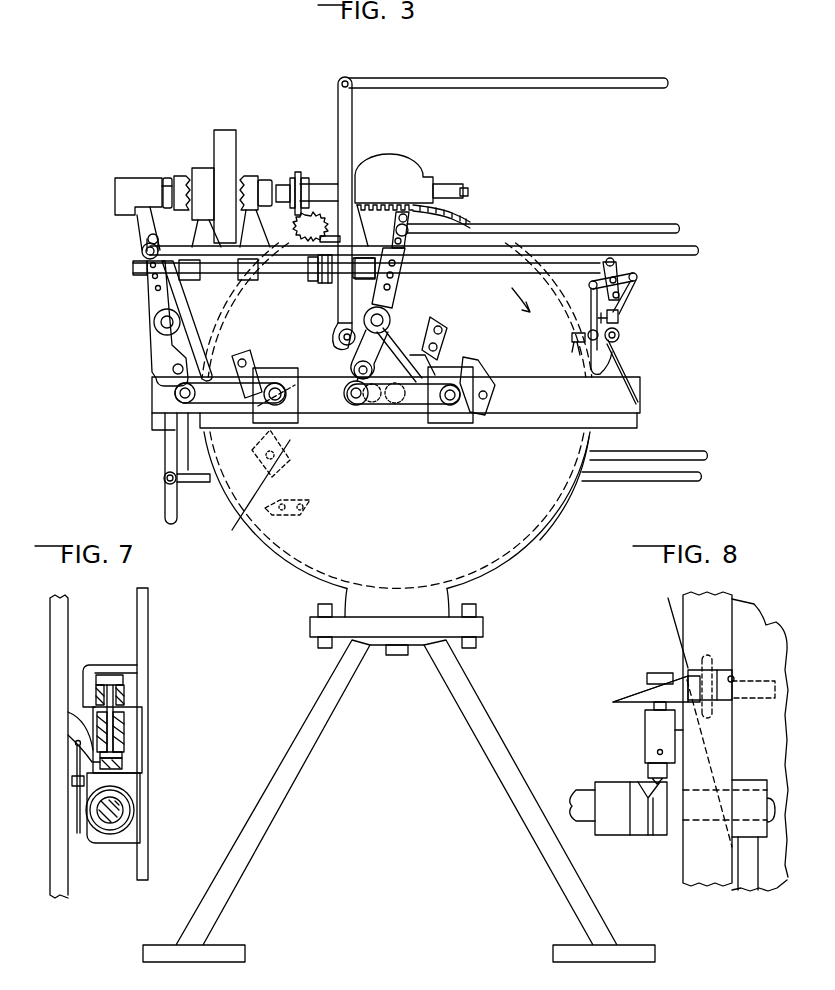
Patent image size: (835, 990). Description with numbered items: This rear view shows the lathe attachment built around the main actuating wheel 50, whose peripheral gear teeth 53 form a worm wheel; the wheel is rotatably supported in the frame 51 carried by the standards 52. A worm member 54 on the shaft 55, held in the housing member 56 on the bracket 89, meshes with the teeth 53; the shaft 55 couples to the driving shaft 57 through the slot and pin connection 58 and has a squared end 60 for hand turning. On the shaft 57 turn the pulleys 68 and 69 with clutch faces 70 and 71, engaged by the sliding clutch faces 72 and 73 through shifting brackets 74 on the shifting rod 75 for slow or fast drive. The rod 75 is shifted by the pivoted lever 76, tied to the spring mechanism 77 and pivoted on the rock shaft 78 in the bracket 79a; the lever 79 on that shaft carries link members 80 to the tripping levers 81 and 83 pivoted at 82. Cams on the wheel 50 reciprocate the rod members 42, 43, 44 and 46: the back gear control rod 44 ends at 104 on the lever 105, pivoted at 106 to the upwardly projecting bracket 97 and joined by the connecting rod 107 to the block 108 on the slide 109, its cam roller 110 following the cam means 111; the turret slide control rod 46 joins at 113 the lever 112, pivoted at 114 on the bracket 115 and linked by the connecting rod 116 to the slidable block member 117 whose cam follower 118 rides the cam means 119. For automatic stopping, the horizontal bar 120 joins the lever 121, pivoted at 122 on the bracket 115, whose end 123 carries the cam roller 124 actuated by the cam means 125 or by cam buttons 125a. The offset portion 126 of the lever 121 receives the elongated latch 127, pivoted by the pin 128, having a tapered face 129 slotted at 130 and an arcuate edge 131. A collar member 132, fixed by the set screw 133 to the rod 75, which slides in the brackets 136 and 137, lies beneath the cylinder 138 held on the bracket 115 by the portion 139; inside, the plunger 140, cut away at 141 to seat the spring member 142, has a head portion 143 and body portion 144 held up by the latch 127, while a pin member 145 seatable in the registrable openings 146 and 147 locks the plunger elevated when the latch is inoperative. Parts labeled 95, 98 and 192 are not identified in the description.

In FIG. 3, the horizontal bar 120 is at (606, 78).
In FIG. 3, the lever 121 is at (338, 106).
In FIG. 7, the lever 121 is at (149, 604).
In FIG. 8, the lever 121 is at (735, 601).
In FIG. 3, the bearing bracket 98 is at (126, 180).
In FIG. 3, the clutch face 73 is at (168, 177).
In FIG. 3, the clutch face 71 is at (182, 175).
In FIG. 3, the pulley 69 is at (200, 167).
In FIG. 3, the pulley 68 is at (226, 129).
In FIG. 3, the clutch face 70 is at (245, 175).
In FIG. 3, the clutch face 72 is at (266, 179).
In FIG. 3, the driving shaft 57 is at (283, 184).
In FIG. 3, the slot and pin connection 58 is at (300, 171).
In FIG. 3, the housing member 56 is at (360, 172).
In FIG. 3, the worm member 54 is at (392, 204).
In FIG. 3, the gear teeth 53 is at (450, 212).
In FIG. 3, the shaft 55 is at (446, 183).
In FIG. 3, the squared end 60 is at (466, 188).
In FIG. 3, the adjustable connection 113 is at (396, 225).
In FIG. 3, the turret slide control rod 46 is at (668, 223).
In FIG. 3, the back gear control rod 44 is at (699, 249).
In FIG. 3, the shifting rod 75 is at (220, 276).
In FIG. 7, the shifting rod 75 is at (120, 820).
In FIG. 8, the shifting rod 75 is at (584, 796).
In FIG. 3, the set screw 133 is at (308, 272).
In FIG. 3, the coupling member 192 is at (326, 284).
In FIG. 3, the tapered face 129 is at (304, 232).
In FIG. 8, the tapered face 129 is at (768, 685).
In FIG. 3, the bracket 136 is at (366, 279).
In FIG. 7, the bracket 136 is at (90, 843).
In FIG. 8, the bracket 136 is at (758, 860).
In FIG. 3, the rod end 104 is at (142, 256).
In FIG. 3, the shifting bracket 74 is at (148, 236).
In FIG. 3, the bracket 137 is at (150, 280).
In FIG. 3, the pivoted lever 105 is at (160, 299).
In FIG. 3, the upwardly projecting bracket 97 is at (160, 350).
In FIG. 3, the pivot 106 is at (155, 327).
In FIG. 3, the slide 109 is at (325, 416).
In FIG. 3, the connecting rod 107 is at (212, 380).
In FIG. 3, the block 108 is at (270, 368).
In FIG. 3, the cam roller 110 is at (284, 384).
In FIG. 3, the bracket 89 is at (392, 308).
In FIG. 3, the lever 112 is at (386, 300).
In FIG. 3, the pivot 114 is at (398, 320).
In FIG. 3, the bracket 115 is at (394, 336).
In FIG. 7, the bracket 115 is at (63, 614).
In FIG. 8, the bracket 115 is at (668, 612).
In FIG. 3, the pivot 122 is at (339, 334).
In FIG. 3, the lever end 123 is at (350, 380).
In FIG. 3, the cam means 125 is at (352, 378).
In FIG. 3, the cam roller 124 is at (371, 403).
In FIG. 3, the cam buttons 125a is at (394, 404).
In FIG. 3, the connecting rod 116 is at (420, 405).
In FIG. 3, the cam follower 118 is at (470, 420).
In FIG. 3, the slidable block member 117 is at (460, 424).
In FIG. 3, the cam means 119 is at (452, 342).
In FIG. 3, the pivoted lever 76 is at (620, 268).
In FIG. 3, the lever 79 is at (637, 284).
In FIG. 3, the rock shaft 78 is at (630, 303).
In FIG. 3, the link member 80 is at (626, 316).
In FIG. 3, the spring mechanism 77 is at (620, 326).
In FIG. 3, the tripping lever 81 is at (578, 333).
In FIG. 3, the pivot 82 is at (620, 338).
In FIG. 3, the bracket 79a is at (610, 348).
In FIG. 3, the tripping lever 83 is at (604, 352).
In FIG. 3, the rod 95 is at (166, 458).
In FIG. 3, the rod 42 is at (688, 451).
In FIG. 3, the rod member 43 is at (684, 481).
In FIG. 3, the main actuating wheel 50 is at (470, 292).
In FIG. 3, the frame 51 is at (546, 540).
In FIG. 3, the cam means 111 is at (240, 518).
In FIG. 3, the standards 52 is at (476, 744).
In FIG. 7, the offset portion 126 is at (92, 664).
In FIG. 8, the offset portion 126 is at (735, 681).
In FIG. 7, the head portion 143 is at (123, 680).
In FIG. 8, the head portion 143 is at (658, 672).
In FIG. 7, the body portion 144 is at (125, 692).
In FIG. 8, the body portion 144 is at (652, 708).
In FIG. 7, the slot 130 is at (124, 704).
In FIG. 7, the opening 146 is at (134, 760).
In FIG. 7, the cut-away portion 141 is at (114, 738).
In FIG. 7, the spring member 142 is at (126, 746).
In FIG. 7, the opening 147 is at (84, 730).
In FIG. 7, the plunger 140 is at (124, 768).
In FIG. 8, the plunger 140 is at (646, 768).
In FIG. 7, the supporting portion 139 is at (76, 742).
In FIG. 8, the supporting portion 139 is at (686, 742).
In FIG. 7, the cylinder 138 is at (96, 762).
In FIG. 8, the cylinder 138 is at (644, 741).
In FIG. 7, the collar member 132 is at (134, 818).
In FIG. 8, the collar member 132 is at (654, 835).
In FIG. 7, the pin member 145 is at (74, 818).
In FIG. 8, the pin 128 is at (714, 670).
In FIG. 8, the arcuate edge 131 is at (737, 696).
In FIG. 8, the latch 127 is at (694, 694).